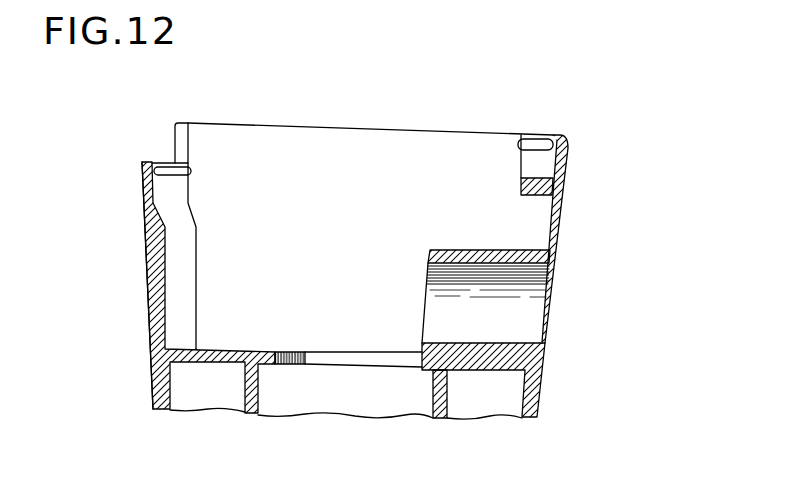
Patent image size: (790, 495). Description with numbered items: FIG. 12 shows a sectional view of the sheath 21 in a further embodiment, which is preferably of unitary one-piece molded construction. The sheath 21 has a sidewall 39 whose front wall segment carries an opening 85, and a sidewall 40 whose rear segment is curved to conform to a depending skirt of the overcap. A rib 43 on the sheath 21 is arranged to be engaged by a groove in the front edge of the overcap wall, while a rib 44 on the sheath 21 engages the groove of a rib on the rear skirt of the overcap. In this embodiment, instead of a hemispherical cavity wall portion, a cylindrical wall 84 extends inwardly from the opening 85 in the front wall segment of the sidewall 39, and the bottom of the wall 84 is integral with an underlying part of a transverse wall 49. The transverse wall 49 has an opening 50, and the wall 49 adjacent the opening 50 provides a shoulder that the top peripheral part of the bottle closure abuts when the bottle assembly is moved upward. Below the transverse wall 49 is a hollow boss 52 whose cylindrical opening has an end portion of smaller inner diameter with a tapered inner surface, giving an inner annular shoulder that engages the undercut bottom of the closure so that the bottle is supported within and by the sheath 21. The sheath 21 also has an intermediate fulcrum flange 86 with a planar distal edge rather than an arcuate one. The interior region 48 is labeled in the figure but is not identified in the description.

The sheath 21 is at (135, 277).
The sidewall 39 is at (150, 336).
The sidewall 40 is at (272, 125).
The rib 43 is at (542, 145).
The rib 44 is at (162, 162).
The chamber 48 is at (286, 226).
The transverse wall 49 is at (215, 350).
The opening 50 is at (290, 350).
The hollow boss 52 is at (243, 403).
The cylindrical wall 84 is at (452, 252).
The opening 85 is at (533, 266).
The intermediate fulcrum flange 86 is at (528, 175).